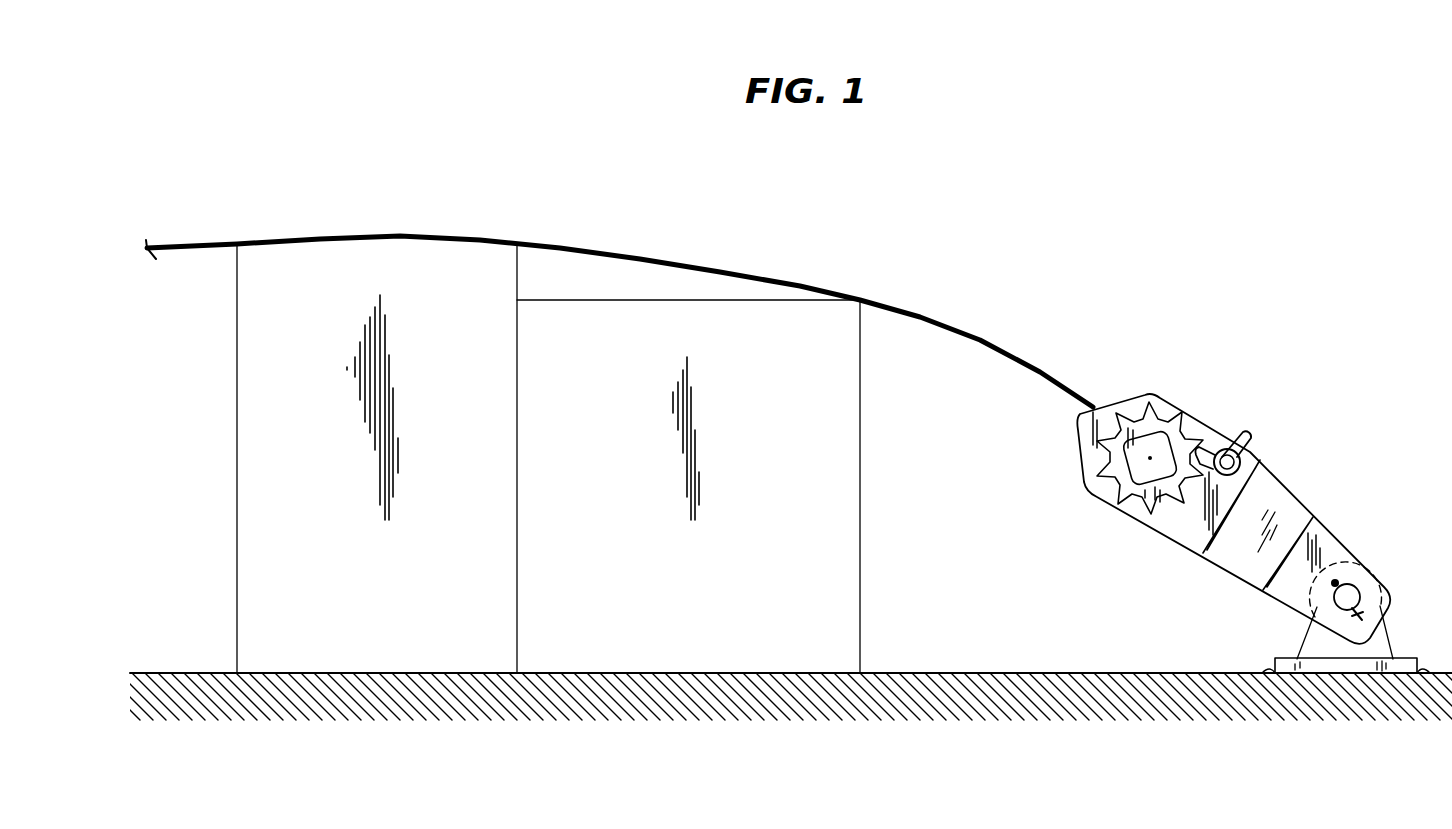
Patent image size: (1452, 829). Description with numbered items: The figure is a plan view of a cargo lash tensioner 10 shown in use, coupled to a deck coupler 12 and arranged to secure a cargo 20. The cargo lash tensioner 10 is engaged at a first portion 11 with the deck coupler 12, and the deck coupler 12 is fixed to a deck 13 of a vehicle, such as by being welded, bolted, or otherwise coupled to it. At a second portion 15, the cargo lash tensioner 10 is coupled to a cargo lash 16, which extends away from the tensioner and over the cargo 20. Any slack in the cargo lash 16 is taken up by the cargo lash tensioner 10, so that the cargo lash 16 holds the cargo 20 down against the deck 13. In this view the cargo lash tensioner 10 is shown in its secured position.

The cargo lash tensioner 10 is at (1253, 405).
The first portion 11 is at (1316, 485).
The deck coupler 12 is at (1383, 637).
The deck 13 is at (1155, 672).
The second portion 15 is at (1168, 377).
The cargo lash 16 is at (978, 340).
The cargo 20 is at (841, 445).